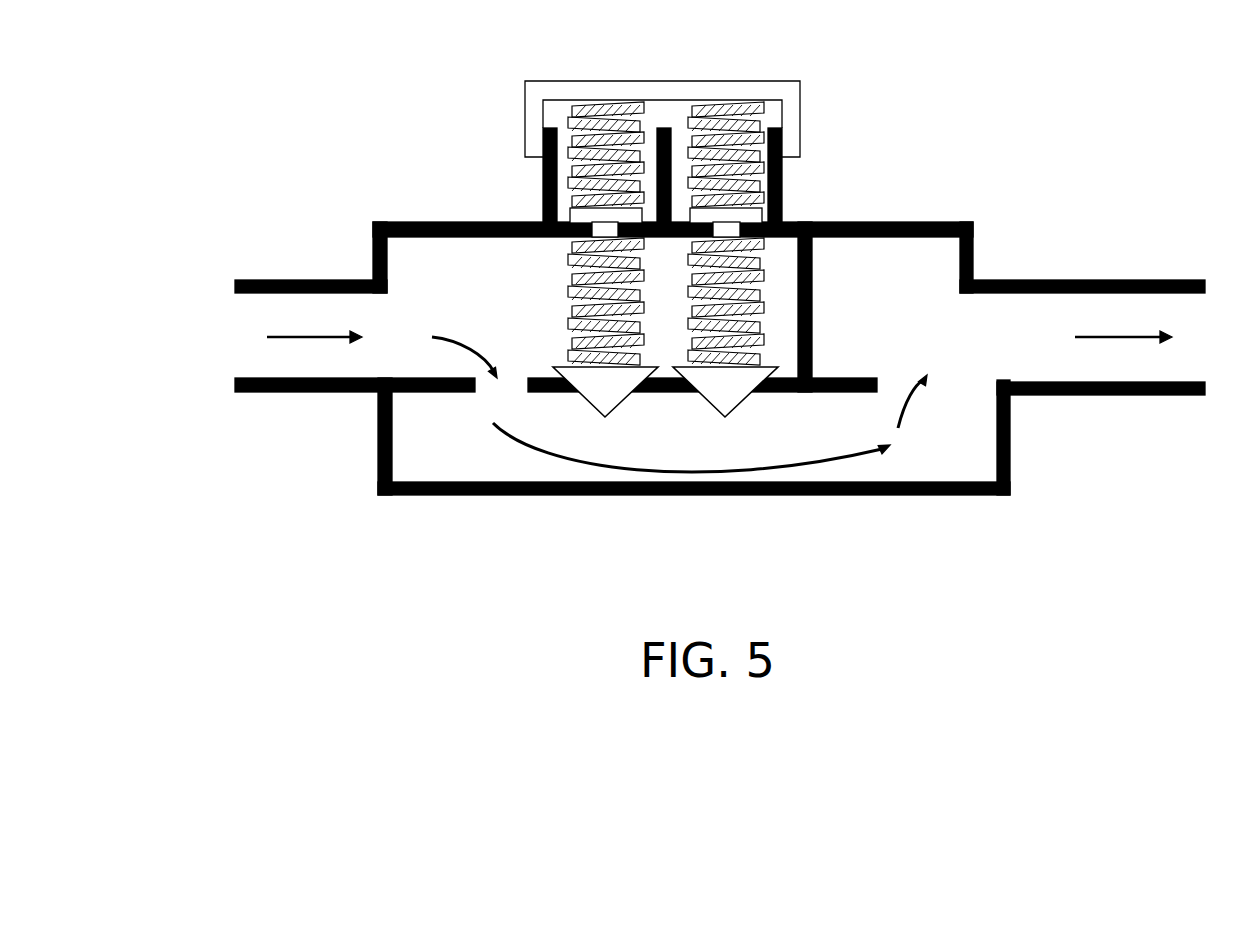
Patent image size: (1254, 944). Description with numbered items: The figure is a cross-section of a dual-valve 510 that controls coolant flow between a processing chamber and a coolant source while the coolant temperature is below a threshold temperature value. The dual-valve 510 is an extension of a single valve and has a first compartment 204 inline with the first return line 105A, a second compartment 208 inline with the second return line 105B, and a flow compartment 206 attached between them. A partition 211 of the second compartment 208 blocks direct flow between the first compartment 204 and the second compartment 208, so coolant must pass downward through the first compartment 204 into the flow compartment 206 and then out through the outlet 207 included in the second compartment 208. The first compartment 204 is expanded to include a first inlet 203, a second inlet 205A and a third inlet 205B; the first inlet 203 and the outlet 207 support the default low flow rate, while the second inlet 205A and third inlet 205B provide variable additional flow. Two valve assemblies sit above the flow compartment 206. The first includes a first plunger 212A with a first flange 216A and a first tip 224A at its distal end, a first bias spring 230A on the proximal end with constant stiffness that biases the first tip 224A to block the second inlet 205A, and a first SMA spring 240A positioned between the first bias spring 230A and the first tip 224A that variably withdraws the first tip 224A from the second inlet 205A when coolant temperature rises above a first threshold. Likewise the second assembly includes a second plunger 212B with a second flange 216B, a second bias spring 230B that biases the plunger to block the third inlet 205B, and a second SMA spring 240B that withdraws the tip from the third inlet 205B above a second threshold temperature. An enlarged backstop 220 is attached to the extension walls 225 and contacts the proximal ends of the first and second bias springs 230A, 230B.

The dual-valve 510 is at (278, 172).
The first return line 105A is at (237, 280).
The second return line 105B is at (1142, 395).
The first compartment 204 is at (410, 273).
The flow compartment 206 is at (410, 452).
The first inlet 203 is at (487, 393).
The outlet 207 is at (978, 393).
The second compartment 208 is at (905, 270).
The partition 211 is at (813, 337).
The backstop 220 is at (790, 100).
The extension walls 225 is at (543, 177).
The first bias spring 230A is at (643, 102).
The second bias spring 230B is at (750, 102).
The first flange 216A is at (570, 212).
The second flange 216B is at (780, 220).
The first plunger 212A is at (568, 226).
The second plunger 212B is at (783, 128).
The first SMA spring 240A is at (570, 267).
The second SMA spring 240B is at (762, 282).
The first tip 224A is at (595, 410).
The second inlet 205A is at (637, 398).
The third inlet 205B is at (693, 397).